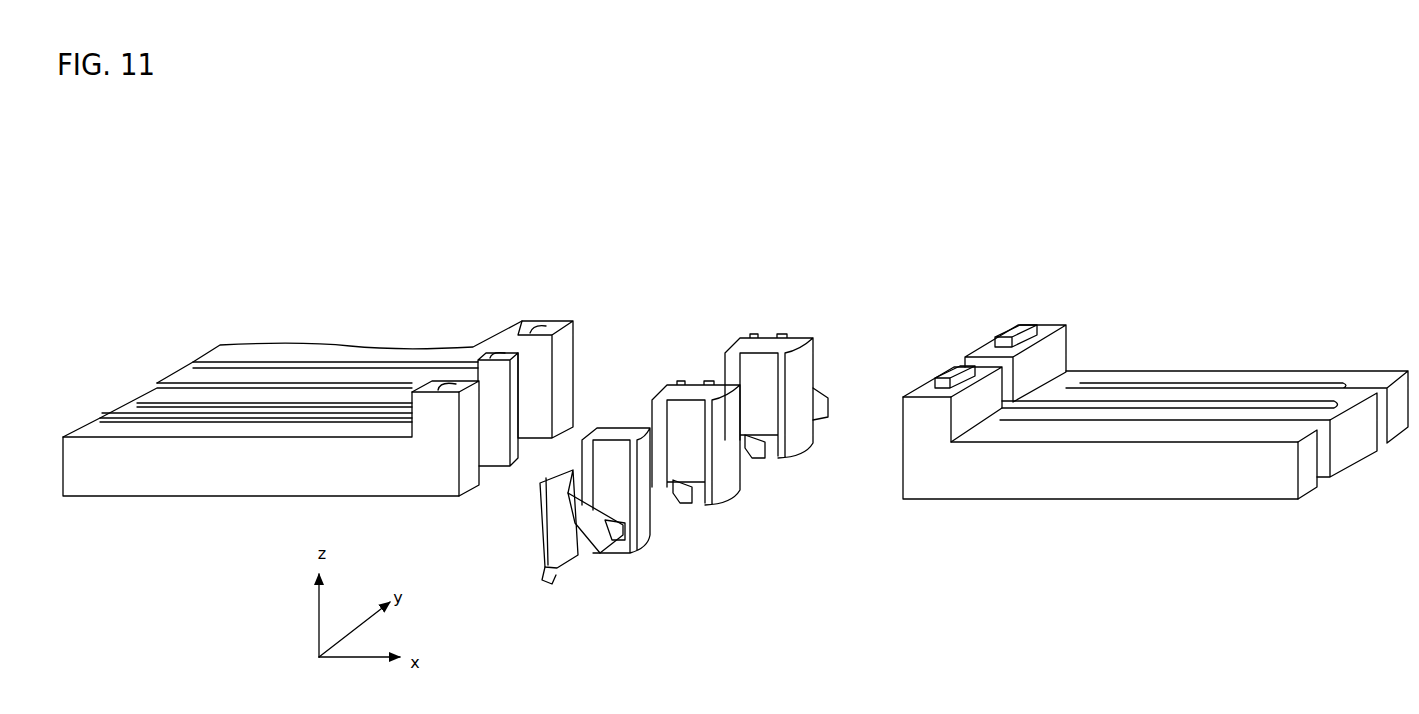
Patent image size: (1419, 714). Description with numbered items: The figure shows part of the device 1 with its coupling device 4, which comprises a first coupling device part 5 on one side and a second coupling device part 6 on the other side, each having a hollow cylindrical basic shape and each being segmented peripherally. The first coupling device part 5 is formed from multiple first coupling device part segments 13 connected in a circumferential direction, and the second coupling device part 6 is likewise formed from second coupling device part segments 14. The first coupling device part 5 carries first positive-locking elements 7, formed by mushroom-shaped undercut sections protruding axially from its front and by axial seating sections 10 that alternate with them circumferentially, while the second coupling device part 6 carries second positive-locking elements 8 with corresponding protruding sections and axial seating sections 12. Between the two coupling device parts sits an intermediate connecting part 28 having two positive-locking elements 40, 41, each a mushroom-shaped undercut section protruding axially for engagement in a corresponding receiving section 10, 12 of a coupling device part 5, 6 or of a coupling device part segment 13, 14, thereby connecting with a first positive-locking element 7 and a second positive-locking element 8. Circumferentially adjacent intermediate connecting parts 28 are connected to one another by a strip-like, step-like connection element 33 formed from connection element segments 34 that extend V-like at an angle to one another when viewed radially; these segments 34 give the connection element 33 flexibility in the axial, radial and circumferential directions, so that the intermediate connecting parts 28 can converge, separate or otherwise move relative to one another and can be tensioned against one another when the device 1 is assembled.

The device 1 is at (473, 210).
The coupling device 4 is at (995, 228).
The first coupling device part 5 is at (282, 288).
The second coupling device part 6 is at (1240, 338).
The first positive-locking element 7 is at (548, 318).
The second positive-locking element 8 is at (1080, 305).
The axial seating section 10 is at (514, 323).
The axial seating section 12 is at (1021, 326).
The first coupling device part segment 13 is at (344, 338).
The second coupling device part segment 14 is at (1294, 361).
The intermediate connecting part 28 is at (802, 324).
The connection element 33 is at (597, 574).
The connection element segment 34 is at (567, 553).
The positive-locking element 40 is at (716, 338).
The positive-locking element 41 is at (798, 360).